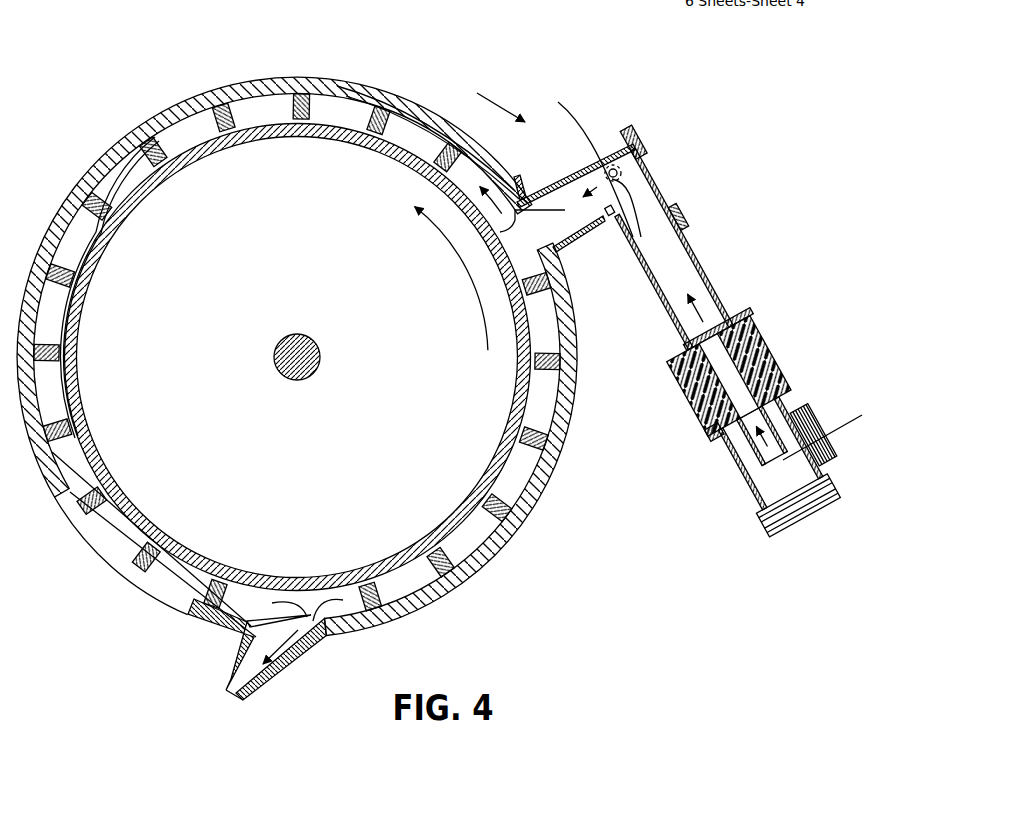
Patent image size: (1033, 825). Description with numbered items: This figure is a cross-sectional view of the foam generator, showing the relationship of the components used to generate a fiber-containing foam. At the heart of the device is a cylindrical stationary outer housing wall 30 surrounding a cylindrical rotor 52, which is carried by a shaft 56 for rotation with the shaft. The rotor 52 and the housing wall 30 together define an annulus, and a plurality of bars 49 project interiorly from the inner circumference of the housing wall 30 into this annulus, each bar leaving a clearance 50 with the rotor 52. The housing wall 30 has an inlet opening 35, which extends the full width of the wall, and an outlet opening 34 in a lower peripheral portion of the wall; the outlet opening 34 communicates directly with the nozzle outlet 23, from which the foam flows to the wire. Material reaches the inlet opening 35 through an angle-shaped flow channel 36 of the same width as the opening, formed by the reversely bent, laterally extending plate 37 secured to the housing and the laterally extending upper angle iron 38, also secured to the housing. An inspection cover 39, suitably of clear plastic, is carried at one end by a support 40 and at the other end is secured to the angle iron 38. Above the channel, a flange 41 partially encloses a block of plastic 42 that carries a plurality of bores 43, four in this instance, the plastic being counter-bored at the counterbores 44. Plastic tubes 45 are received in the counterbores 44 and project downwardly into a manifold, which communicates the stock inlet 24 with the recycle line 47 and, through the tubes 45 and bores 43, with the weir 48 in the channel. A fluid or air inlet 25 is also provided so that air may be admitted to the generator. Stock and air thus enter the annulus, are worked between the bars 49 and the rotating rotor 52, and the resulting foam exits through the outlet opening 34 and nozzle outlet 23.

The nozzle outlet 23 is at (233, 636).
The stock inlet 24 is at (777, 353).
The fluid or air inlet 25 is at (613, 165).
The outer housing wall 30 is at (197, 98).
The outlet opening 34 is at (330, 622).
The inlet opening 35 is at (565, 303).
The flow channel 36 is at (680, 253).
The plate 37 is at (655, 290).
The upper angle iron 38 is at (567, 173).
The inspection cover 39 is at (645, 135).
The support 40 is at (699, 300).
The flange 41 is at (738, 318).
The block of plastic 42 is at (673, 383).
The bores 43 is at (735, 380).
The counterbores 44 is at (698, 417).
The plastic tubes 45 is at (730, 447).
The recycle line 47 is at (812, 508).
The weir 48 is at (555, 152).
The bars 49 is at (338, 86).
The clearance 50 is at (72, 325).
The rotor 52 is at (237, 138).
The shaft 56 is at (300, 336).